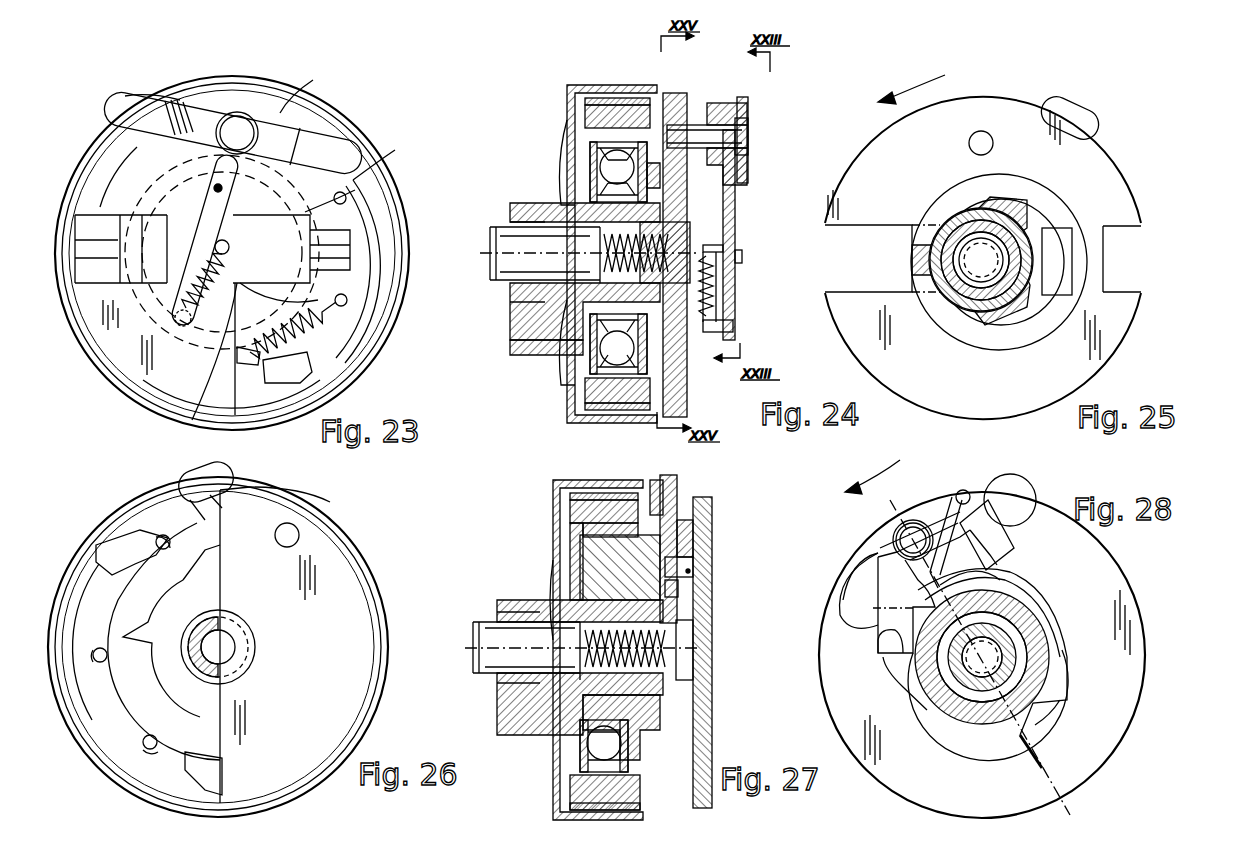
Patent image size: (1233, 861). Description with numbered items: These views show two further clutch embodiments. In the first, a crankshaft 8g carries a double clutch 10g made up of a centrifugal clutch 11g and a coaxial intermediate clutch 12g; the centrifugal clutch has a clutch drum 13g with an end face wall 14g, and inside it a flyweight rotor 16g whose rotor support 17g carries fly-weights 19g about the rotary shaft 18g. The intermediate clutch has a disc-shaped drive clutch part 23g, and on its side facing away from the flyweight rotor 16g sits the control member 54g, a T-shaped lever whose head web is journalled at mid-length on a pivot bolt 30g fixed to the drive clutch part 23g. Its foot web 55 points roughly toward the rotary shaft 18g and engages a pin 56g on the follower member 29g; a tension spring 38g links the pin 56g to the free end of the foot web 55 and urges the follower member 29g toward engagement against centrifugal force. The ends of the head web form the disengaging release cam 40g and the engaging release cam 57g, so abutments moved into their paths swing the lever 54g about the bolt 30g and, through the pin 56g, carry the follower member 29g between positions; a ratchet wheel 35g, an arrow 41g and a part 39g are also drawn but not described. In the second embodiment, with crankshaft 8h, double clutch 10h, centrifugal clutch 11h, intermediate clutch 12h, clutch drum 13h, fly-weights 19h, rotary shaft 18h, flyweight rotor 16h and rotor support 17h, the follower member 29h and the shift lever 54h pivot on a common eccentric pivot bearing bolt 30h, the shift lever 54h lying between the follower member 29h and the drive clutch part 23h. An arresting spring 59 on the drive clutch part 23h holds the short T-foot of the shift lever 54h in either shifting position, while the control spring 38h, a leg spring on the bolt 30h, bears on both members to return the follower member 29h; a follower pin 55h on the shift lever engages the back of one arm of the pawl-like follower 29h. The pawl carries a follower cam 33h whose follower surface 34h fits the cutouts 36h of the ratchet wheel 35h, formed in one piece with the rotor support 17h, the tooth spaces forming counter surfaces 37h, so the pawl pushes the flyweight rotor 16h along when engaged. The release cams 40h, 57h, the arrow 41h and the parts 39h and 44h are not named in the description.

In FIG. 24, the shaft 8g is at (495, 232).
In FIG. 27, the shaft 8h is at (483, 620).
In FIG. 24, the clutch assembly 10g is at (645, 75).
In FIG. 27, the clutch assembly 10h is at (608, 470).
In FIG. 24, the housing 11g is at (567, 100).
In FIG. 27, the housing 11h is at (553, 485).
In FIG. 24, the cover plate 12g is at (748, 98).
In FIG. 27, the cover plate 12h is at (725, 500).
In FIG. 28, the cover plate 12h is at (982, 655).
In FIG. 23, the drum 13g is at (385, 172).
In FIG. 24, the drum 13g is at (570, 95).
In FIG. 27, the drum 13h is at (566, 480).
In FIG. 24, the flange 14g is at (578, 172).
In FIG. 24, the flyweight rotor 16g is at (598, 145).
In FIG. 27, the flyweight rotor 16h is at (568, 532).
In FIG. 24, the hub 17g is at (600, 193).
In FIG. 27, the rotor support 17h is at (600, 560).
In FIG. 24, the rotary shaft 18g is at (495, 275).
In FIG. 27, the shaft end 18h is at (488, 650).
In FIG. 24, the bearing block 19g is at (590, 118).
In FIG. 27, the bearing block 19h is at (580, 505).
In FIG. 24, the drive clutch part 23g is at (688, 378).
In FIG. 25, the drive clutch part 23g is at (878, 150).
In FIG. 26, the drive clutch part 23h is at (218, 647).
In FIG. 27, the drive clutch part 23h is at (712, 550).
In FIG. 23, the follower member 29g is at (300, 235).
In FIG. 24, the follower member 29g is at (728, 190).
In FIG. 25, the follower member 29g is at (940, 205).
In FIG. 27, the follower member 29h is at (658, 480).
In FIG. 28, the follower member 29h is at (900, 540).
In FIG. 23, the pivot bolt 30g is at (237, 117).
In FIG. 24, the pivot bolt 30g is at (695, 132).
In FIG. 26, the common pivot bearing bolt 30h is at (288, 547).
In FIG. 28, the common pivot bearing bolt 30h is at (913, 520).
In FIG. 28, the follower cam 33h is at (880, 640).
In FIG. 28, the follower surface 34h is at (890, 680).
In FIG. 25, the hub cam 35g is at (925, 262).
In FIG. 26, the ratchet wheel 35h is at (218, 647).
In FIG. 28, the ratchet wheel 35h is at (970, 728).
In FIG. 26, the cutouts 36h is at (160, 693).
In FIG. 28, the cutouts 36h is at (1052, 690).
In FIG. 28, the counter surfaces 37h is at (887, 643).
In FIG. 23, the tension spring 38g is at (200, 417).
In FIG. 24, the tension spring 38g is at (728, 322).
In FIG. 28, the control spring 38h is at (878, 565).
In FIG. 23, the lever 39g is at (165, 165).
In FIG. 28, the lever 39h is at (997, 565).
In FIG. 23, the disengaging release cam 40g is at (140, 100).
In FIG. 26, the lug 40h is at (190, 468).
In FIG. 28, the lug 40h is at (1010, 480).
In FIG. 25, the rotation direction 41g is at (920, 80).
In FIG. 28, the rotation direction 41h is at (866, 484).
In FIG. 28, the stop 44h is at (1060, 800).
In FIG. 23, the control member 54g is at (295, 112).
In FIG. 24, the control member 54g is at (736, 215).
In FIG. 27, the shift lever 54h is at (680, 495).
In FIG. 28, the shift lever 54h is at (890, 548).
In FIG. 23, the foot web 55 is at (205, 228).
In FIG. 24, the foot web 55 is at (730, 287).
In FIG. 28, the follower 55h is at (963, 490).
In FIG. 23, the pin 56g is at (229, 253).
In FIG. 24, the pin 56g is at (742, 257).
In FIG. 23, the engaging release cam 57g is at (345, 148).
In FIG. 28, the arm 57h is at (845, 612).
In FIG. 27, the arresting spring 59 is at (694, 590).
In FIG. 28, the arresting spring 59 is at (1045, 600).